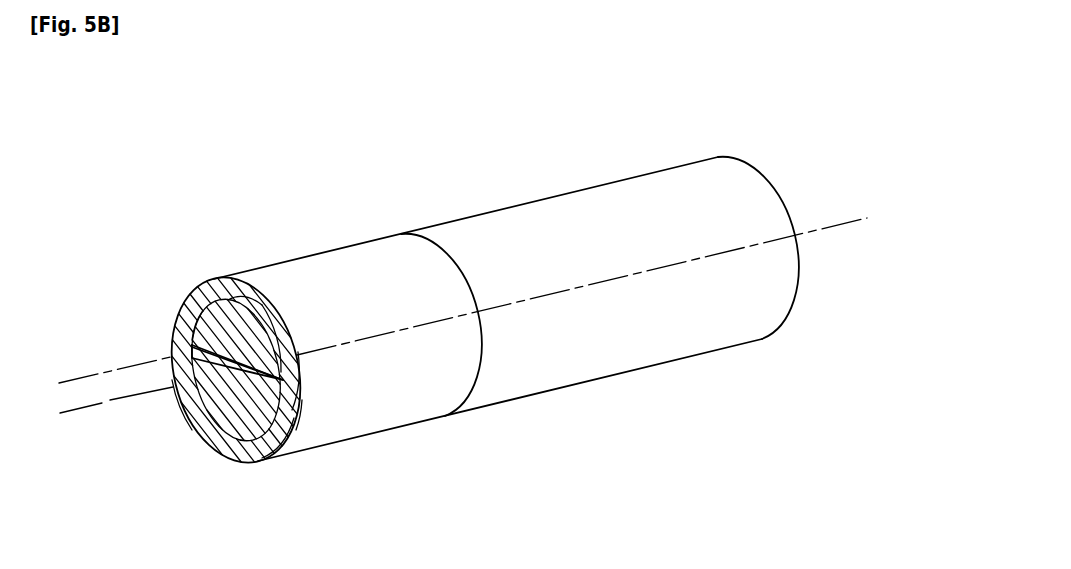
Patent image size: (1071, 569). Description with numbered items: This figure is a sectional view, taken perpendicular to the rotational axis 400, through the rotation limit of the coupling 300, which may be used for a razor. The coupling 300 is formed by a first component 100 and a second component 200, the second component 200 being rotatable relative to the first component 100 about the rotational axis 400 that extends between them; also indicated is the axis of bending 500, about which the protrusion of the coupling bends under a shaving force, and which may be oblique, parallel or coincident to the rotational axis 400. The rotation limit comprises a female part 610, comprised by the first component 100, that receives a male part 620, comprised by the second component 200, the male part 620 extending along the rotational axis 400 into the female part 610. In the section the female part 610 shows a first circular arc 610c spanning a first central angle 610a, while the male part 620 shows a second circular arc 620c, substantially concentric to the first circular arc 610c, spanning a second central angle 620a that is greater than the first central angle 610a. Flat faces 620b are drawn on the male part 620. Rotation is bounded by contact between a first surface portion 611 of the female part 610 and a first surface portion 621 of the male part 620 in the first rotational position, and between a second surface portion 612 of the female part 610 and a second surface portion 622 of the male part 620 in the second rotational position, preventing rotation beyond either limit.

The first component 100 is at (320, 272).
The second component 200 is at (613, 198).
The coupling 300 is at (452, 178).
The rotational axis 400 is at (130, 396).
The axis of bending 500 is at (63, 383).
The female part 610 is at (250, 300).
The first central angle 610a is at (213, 440).
The first circular arc 610c is at (303, 383).
The first surface portion of the female part 611 is at (283, 417).
The second surface portion of the female part 612 is at (175, 407).
The male part 620 is at (208, 293).
The second central angle 620a is at (280, 337).
The flat surface 620b is at (185, 338).
The second circular arc 620c is at (258, 282).
The first surface portion of the male part 621 is at (317, 423).
The second surface portion of the male part 622 is at (190, 320).